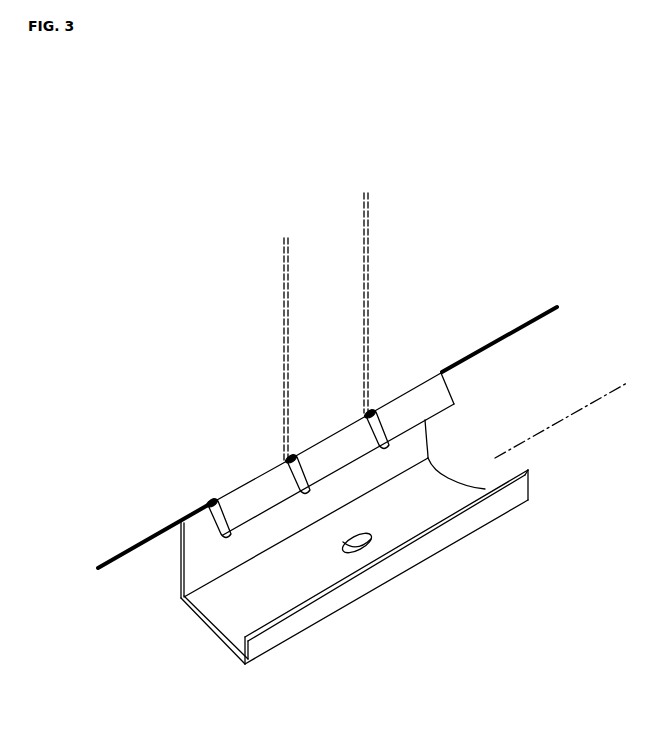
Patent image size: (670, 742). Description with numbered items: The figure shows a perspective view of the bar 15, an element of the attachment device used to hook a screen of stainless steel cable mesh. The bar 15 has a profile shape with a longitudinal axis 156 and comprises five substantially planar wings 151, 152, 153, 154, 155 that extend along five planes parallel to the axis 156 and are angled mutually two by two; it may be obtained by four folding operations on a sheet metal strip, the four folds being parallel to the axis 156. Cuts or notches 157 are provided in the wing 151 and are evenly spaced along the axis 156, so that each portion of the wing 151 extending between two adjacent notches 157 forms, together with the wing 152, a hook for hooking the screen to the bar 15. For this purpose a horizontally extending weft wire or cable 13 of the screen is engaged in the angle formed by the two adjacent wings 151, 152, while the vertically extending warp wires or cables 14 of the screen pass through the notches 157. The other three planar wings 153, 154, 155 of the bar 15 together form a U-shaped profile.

The weft wire or cable 13 is at (130, 551).
The warp wire or cable 14 is at (286, 343).
The bar 15 is at (493, 658).
The wing 151 is at (244, 511).
The wing 152 is at (205, 504).
The wing 153 is at (192, 562).
The wing 154 is at (231, 627).
The wing 155 is at (443, 535).
The longitudinal axis 156 is at (557, 424).
The notch 157 is at (302, 491).